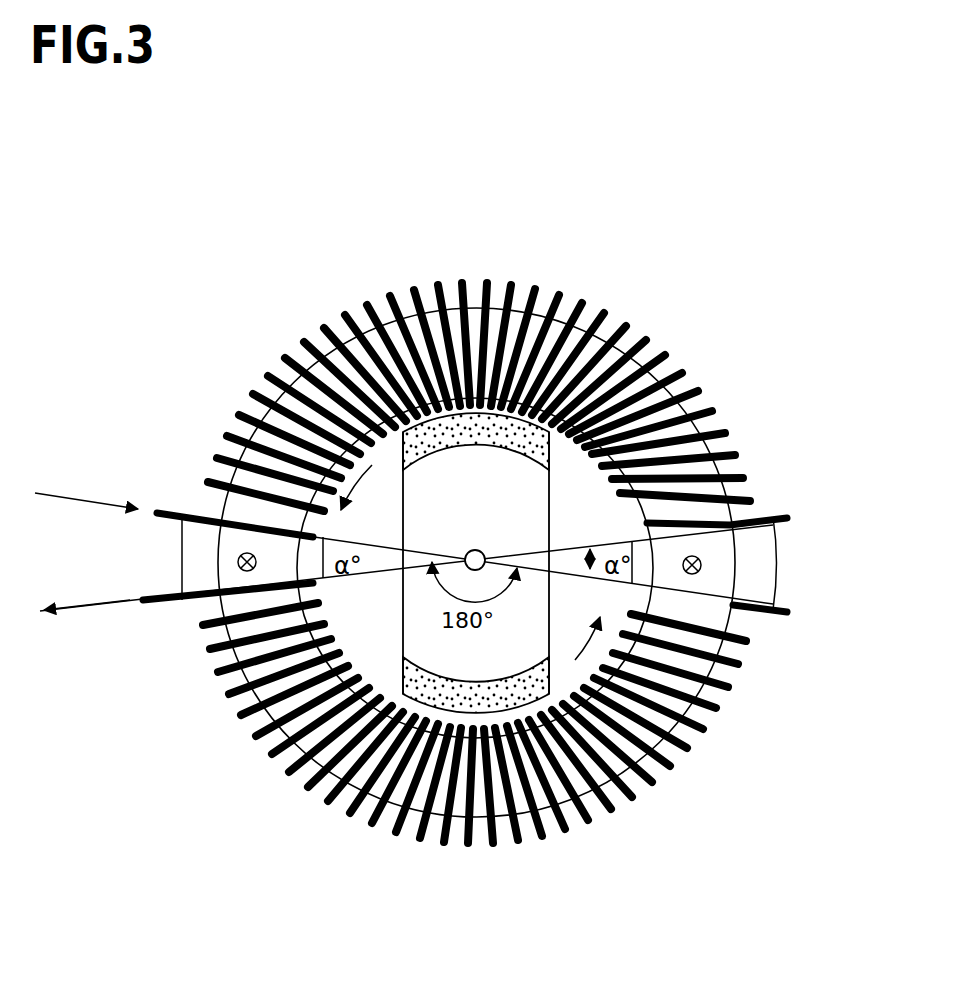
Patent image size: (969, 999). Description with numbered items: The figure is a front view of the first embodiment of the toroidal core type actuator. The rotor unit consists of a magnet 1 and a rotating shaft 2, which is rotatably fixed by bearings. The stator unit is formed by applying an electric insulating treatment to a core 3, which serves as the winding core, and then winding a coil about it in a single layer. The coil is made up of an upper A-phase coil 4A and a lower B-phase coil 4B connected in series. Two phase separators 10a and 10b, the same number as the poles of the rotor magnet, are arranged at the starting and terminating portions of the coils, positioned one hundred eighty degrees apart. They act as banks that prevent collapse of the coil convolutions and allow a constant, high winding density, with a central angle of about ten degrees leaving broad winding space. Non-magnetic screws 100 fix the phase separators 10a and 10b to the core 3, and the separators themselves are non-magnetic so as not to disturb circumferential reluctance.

The magnet 1 is at (500, 432).
The rotating shaft 2 is at (484, 556).
The core 3 is at (508, 802).
The upper coil (A-phase coil) 4A is at (368, 296).
The lower coil (B-phase coil) 4B is at (580, 822).
The phase separator 10a is at (750, 553).
The phase separator 10b is at (268, 560).
The non-magnetic screws 100 is at (238, 570).